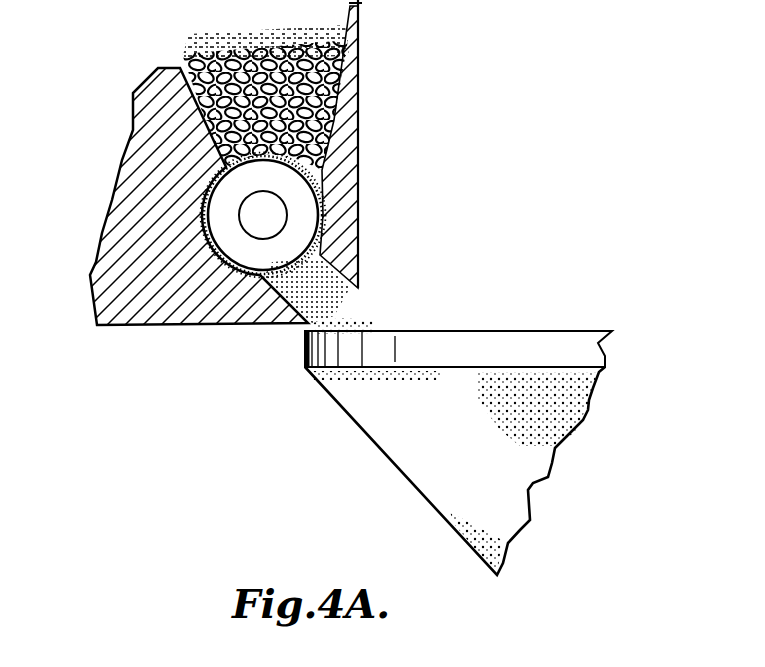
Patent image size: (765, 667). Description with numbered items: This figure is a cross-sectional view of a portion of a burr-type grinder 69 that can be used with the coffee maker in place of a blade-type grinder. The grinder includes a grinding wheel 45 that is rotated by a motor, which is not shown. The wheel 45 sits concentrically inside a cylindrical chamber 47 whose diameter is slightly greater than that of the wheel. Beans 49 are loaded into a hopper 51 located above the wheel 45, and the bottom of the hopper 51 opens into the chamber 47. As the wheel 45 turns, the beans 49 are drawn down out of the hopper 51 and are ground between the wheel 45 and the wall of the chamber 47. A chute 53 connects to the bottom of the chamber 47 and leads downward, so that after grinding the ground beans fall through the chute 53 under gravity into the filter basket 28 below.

The feed hopper assembly 69 is at (104, 106).
The beans 49 is at (214, 66).
The hopper 51 is at (364, 52).
The grinding wheel 45 is at (306, 207).
The cylindrical chamber 47 is at (240, 268).
The chute 53 is at (338, 297).
The filter basket 28 is at (583, 400).